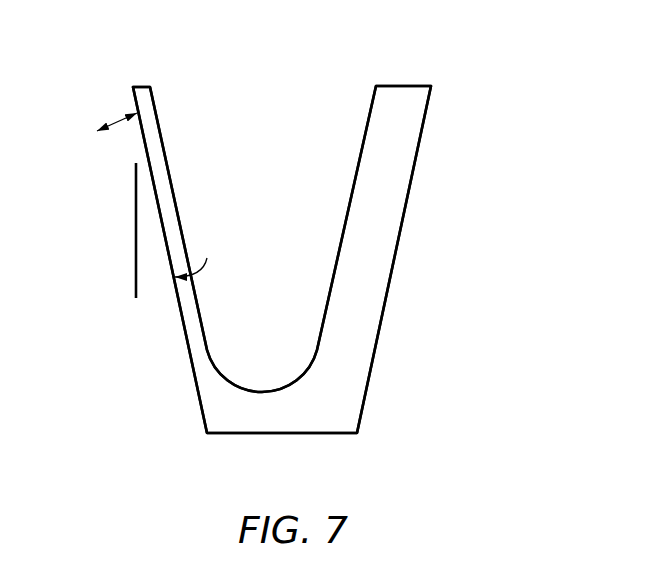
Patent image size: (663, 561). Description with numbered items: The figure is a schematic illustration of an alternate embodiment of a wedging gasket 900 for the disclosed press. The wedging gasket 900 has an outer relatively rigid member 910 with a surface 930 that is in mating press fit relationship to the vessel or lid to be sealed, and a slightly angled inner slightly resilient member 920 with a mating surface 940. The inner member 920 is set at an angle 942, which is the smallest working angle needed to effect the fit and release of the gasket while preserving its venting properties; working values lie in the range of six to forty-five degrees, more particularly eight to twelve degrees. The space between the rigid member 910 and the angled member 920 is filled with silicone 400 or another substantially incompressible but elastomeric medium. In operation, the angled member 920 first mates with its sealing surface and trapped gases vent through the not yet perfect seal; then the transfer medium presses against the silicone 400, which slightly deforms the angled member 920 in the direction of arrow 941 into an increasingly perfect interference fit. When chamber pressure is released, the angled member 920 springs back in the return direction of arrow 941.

The wedging gasket 900 is at (467, 208).
The outer relatively rigid member 910 is at (410, 75).
The angled inner slightly resilient member 920 is at (128, 75).
The surface 930 is at (362, 415).
The mating surface 940 is at (202, 416).
The silicone 400 is at (275, 220).
The arrow 941 is at (118, 127).
The angle 942 is at (134, 277).